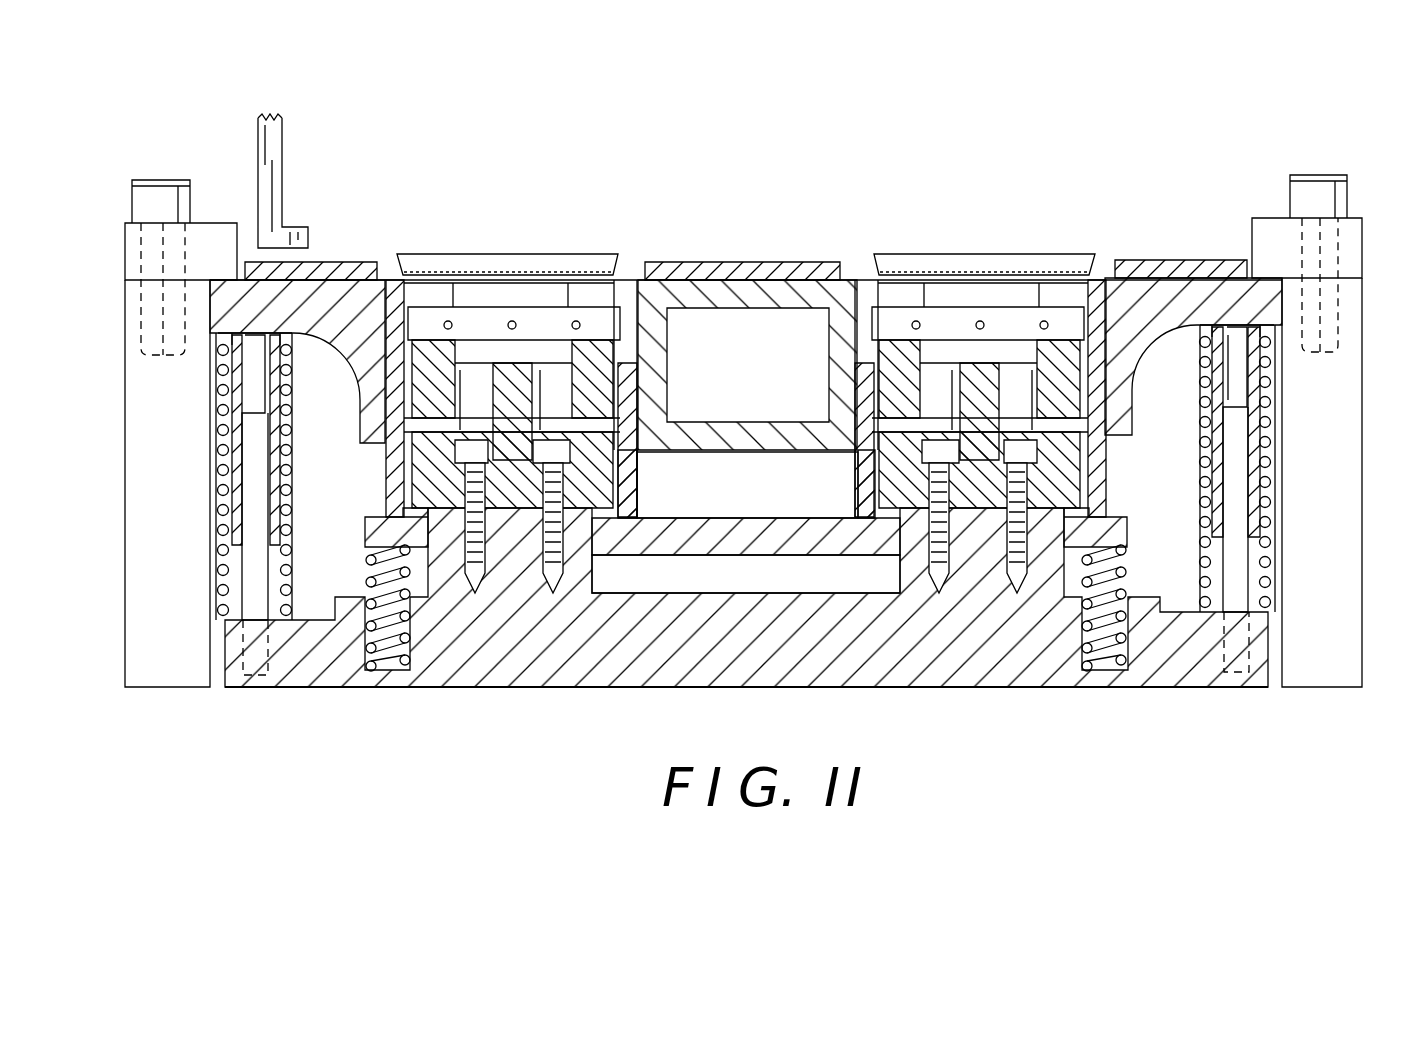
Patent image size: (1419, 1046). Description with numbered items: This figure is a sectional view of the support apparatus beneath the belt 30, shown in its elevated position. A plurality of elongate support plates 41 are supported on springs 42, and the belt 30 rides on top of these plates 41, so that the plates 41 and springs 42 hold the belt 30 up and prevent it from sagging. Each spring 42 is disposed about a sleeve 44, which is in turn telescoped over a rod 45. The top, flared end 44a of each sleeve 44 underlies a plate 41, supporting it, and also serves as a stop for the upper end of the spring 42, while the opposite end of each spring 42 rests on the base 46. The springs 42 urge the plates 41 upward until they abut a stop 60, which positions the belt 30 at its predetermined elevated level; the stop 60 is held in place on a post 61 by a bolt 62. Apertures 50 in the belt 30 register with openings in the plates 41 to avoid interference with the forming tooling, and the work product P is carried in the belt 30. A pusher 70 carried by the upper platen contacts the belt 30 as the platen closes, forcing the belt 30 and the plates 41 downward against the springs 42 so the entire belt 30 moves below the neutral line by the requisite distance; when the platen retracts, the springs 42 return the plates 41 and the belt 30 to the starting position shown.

The belt 30 is at (725, 262).
The support plate 41 is at (350, 292).
The spring 42 is at (1270, 460).
The sleeve 44 is at (1262, 410).
The flared end 44a is at (1270, 333).
The rod 45 is at (1232, 548).
The base 46 is at (1186, 665).
The aperture 50 is at (962, 380).
The stop 60 is at (130, 257).
The post 61 is at (130, 387).
The bolt 62 is at (165, 195).
The pusher 70 is at (270, 205).
The work product P is at (958, 262).